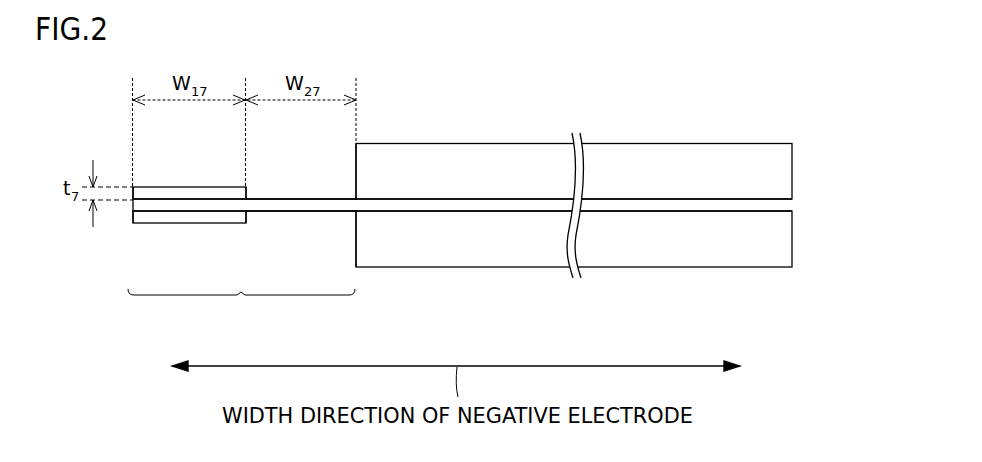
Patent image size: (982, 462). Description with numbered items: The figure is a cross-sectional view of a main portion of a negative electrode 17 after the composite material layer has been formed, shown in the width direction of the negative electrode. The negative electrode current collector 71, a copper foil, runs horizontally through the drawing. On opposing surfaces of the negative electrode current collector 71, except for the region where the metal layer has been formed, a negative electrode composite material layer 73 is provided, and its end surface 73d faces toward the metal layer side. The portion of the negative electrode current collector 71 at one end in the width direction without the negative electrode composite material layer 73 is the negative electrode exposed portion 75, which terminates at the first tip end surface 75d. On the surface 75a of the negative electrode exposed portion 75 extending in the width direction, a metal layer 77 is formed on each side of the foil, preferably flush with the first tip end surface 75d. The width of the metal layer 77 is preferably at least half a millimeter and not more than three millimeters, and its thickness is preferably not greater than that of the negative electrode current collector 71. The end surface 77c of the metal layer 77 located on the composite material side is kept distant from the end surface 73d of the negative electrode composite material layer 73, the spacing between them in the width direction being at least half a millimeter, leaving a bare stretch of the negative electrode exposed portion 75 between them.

The negative electrode 17 is at (760, 90).
The negative electrode current collector 71 is at (785, 206).
The negative electrode composite material layer 73 is at (783, 174).
The end surface of negative electrode composite material layer 73d is at (356, 165).
The negative electrode exposed portion 75 is at (241, 307).
The surface of negative electrode exposed portion 75a is at (311, 198).
The first tip end surface 75d is at (133, 206).
The metal layer 77 is at (188, 193).
The end surface of metal layer 77c is at (247, 193).